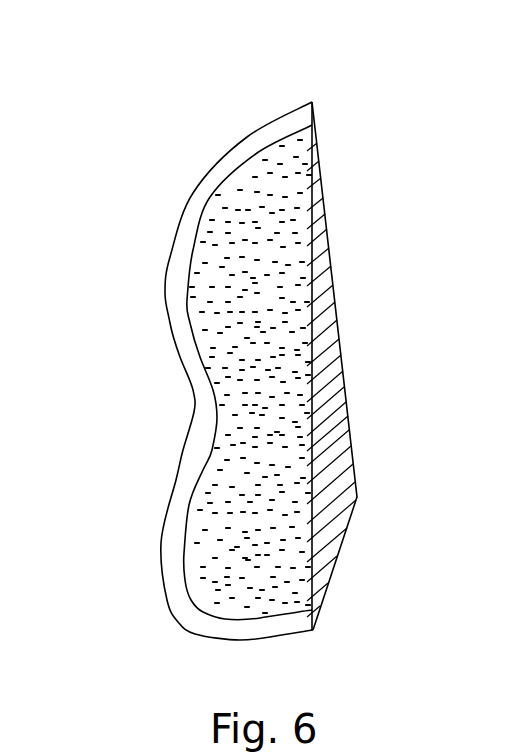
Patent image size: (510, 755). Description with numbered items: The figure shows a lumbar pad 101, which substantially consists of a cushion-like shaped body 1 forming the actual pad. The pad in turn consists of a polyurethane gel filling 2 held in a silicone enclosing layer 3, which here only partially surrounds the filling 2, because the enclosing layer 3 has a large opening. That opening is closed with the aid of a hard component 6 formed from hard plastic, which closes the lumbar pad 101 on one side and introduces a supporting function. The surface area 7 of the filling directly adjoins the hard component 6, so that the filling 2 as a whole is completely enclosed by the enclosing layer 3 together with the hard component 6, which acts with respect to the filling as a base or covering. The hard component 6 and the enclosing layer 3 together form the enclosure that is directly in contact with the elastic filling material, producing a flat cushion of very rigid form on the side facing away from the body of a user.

The lumbar pad 101 is at (215, 354).
The cushion-like shaped body 1 is at (188, 197).
The polyurethane gel filling 2 is at (250, 583).
The silicone enclosing layer 3 is at (266, 140).
The hard component 6 is at (338, 345).
The surface area of the filling 7 is at (322, 234).